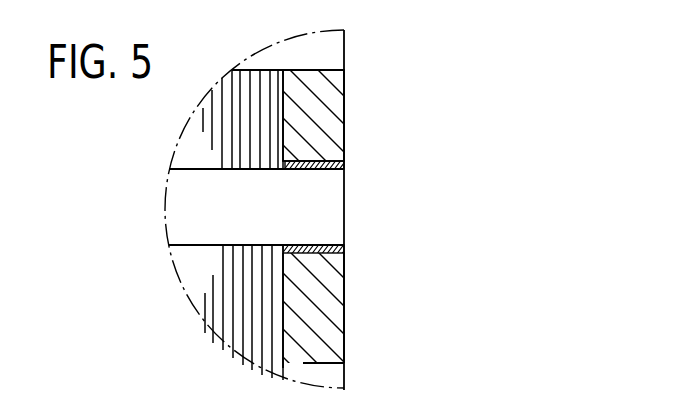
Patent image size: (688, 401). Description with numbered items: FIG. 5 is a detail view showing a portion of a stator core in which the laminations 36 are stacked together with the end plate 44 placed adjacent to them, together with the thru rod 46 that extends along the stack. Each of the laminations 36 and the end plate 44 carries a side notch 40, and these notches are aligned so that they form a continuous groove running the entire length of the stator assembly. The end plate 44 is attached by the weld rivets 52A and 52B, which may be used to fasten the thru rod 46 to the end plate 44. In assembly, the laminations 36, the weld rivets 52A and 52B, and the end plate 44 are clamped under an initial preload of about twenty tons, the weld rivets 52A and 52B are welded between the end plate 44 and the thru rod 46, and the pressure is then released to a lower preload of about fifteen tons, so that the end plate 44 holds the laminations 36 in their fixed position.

The laminations 36 is at (255, 300).
The side notch 40 is at (320, 209).
The end plate 44 is at (308, 122).
The thru rod 46 is at (303, 245).
The weld rivet 52A is at (320, 169).
The weld rivet 52B is at (317, 246).